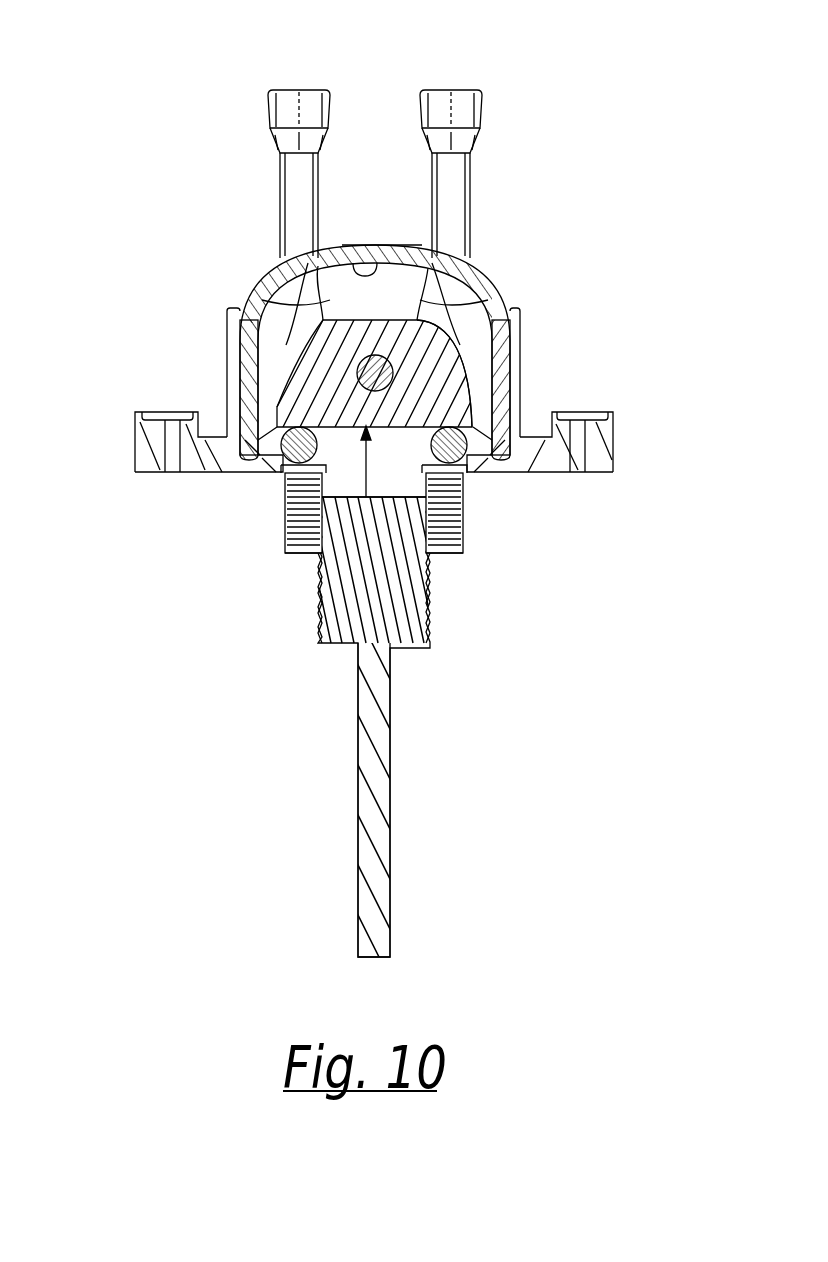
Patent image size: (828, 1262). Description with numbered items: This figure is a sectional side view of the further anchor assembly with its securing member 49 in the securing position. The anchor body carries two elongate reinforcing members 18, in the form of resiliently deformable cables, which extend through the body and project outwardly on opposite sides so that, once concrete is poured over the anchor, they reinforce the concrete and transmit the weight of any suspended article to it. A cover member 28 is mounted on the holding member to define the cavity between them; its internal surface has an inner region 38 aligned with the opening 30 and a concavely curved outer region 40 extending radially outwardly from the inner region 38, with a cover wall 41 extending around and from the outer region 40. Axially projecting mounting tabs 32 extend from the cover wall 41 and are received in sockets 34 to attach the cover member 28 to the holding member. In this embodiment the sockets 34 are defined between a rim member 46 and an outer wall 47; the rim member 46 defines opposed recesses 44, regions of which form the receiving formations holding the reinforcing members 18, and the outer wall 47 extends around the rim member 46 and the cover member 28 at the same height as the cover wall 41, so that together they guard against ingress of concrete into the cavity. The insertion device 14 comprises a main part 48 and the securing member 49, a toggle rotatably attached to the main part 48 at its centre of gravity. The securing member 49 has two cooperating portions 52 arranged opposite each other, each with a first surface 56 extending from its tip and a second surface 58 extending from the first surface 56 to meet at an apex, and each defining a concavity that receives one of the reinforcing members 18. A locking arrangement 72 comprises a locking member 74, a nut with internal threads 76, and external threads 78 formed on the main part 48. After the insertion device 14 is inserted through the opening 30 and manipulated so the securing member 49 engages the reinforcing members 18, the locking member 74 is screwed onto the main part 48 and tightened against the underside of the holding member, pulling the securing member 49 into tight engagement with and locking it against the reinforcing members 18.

The insertion device 14 is at (280, 703).
The reinforcing members 18 is at (296, 207).
The cover member 28 is at (357, 236).
The opening 30 is at (318, 553).
The mounting tabs 32 is at (243, 455).
The sockets 34 is at (512, 402).
The inner region 38 is at (371, 268).
The outer region 40 is at (253, 310).
The cover wall 41 is at (520, 318).
The recesses 44 is at (438, 302).
The rim member 46 is at (506, 350).
The outer wall 47 is at (521, 340).
The main part 48 is at (413, 620).
The securing member 49 is at (366, 497).
The cooperating portions 52 is at (400, 355).
The first surface 56 is at (322, 328).
The second surface 58 is at (330, 277).
The locking arrangement 72 is at (452, 577).
The locking member 74 is at (295, 530).
The internal threads 76 is at (428, 530).
The external threads 78 is at (318, 578).